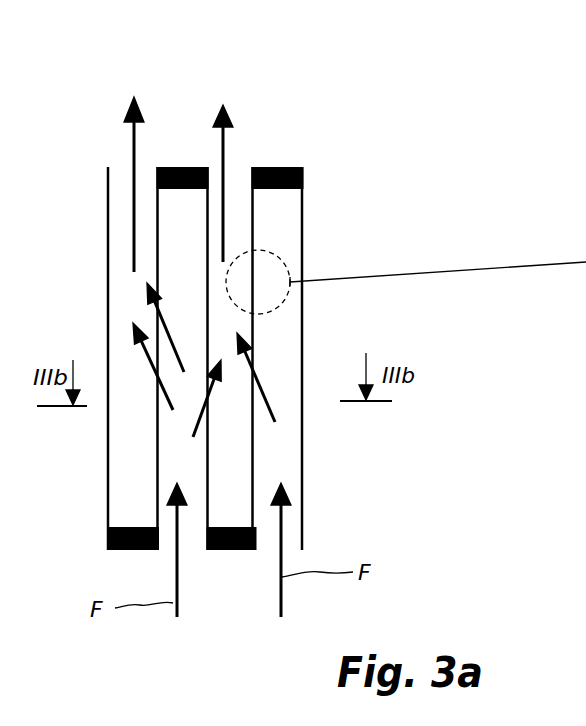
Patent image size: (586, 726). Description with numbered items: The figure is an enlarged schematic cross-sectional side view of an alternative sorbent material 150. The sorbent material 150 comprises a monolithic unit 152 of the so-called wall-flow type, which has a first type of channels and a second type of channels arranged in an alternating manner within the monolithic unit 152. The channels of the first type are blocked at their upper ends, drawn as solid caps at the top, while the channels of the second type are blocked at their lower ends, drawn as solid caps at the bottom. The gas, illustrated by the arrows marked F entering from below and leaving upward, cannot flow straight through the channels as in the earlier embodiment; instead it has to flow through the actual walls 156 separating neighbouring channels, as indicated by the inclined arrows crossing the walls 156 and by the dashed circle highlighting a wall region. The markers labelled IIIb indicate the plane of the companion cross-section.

The sorbent material 150 is at (365, 150).
The monolithic unit 152 is at (303, 327).
The walls 156 is at (255, 277).